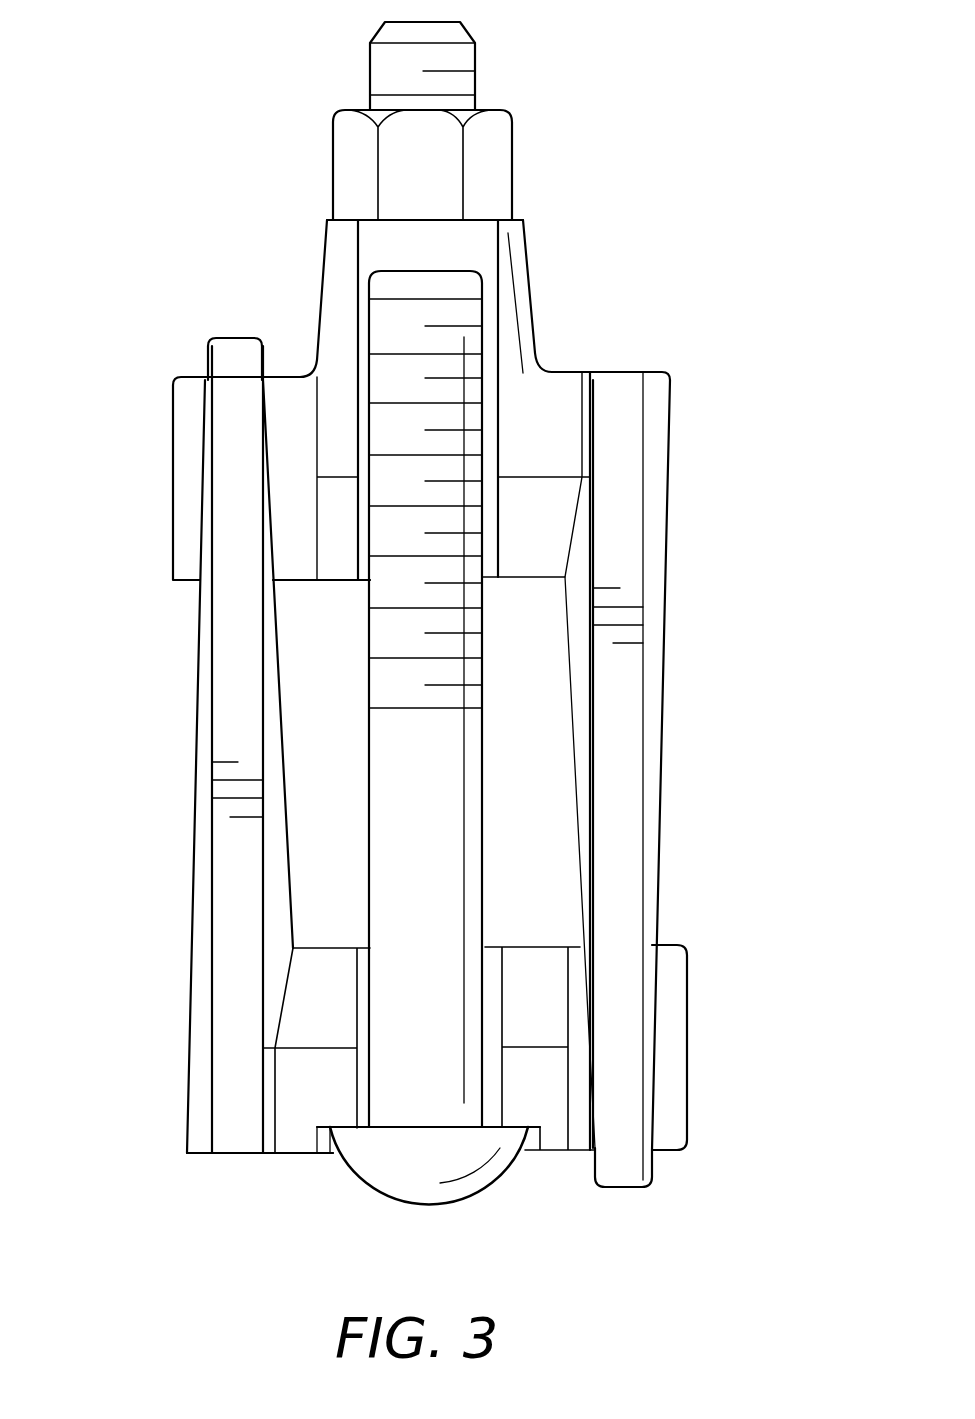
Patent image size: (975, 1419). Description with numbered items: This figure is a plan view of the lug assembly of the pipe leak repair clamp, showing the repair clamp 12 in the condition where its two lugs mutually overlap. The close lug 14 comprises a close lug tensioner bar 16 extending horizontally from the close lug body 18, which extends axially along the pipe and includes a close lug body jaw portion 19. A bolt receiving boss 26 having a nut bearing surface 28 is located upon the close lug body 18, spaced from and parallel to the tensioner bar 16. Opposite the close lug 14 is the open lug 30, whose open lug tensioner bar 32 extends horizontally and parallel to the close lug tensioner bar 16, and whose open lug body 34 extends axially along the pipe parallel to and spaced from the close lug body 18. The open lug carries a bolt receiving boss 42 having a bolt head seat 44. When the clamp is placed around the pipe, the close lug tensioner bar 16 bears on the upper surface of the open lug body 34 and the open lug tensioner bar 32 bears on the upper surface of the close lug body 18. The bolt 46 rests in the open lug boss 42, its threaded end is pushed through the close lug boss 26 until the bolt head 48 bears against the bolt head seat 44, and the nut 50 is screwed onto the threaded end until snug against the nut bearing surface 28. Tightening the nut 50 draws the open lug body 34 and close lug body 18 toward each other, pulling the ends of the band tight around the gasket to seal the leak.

The repair clamp 12 is at (315, 253).
The close lug 14 is at (700, 441).
The close lug tensioner bar 16 is at (625, 777).
The close lug body 18 is at (283, 448).
The close lug body jaw portion 19 is at (333, 580).
The bolt receiving boss 26 is at (527, 282).
The nut bearing surface 28 is at (515, 217).
The open lug 30 is at (173, 999).
The open lug tensioner bar 32 is at (230, 697).
The open lug body 34 is at (333, 1099).
The bolt receiving boss 42 is at (302, 1140).
The bolt head seat 44 is at (538, 1153).
The bolt 46 is at (440, 841).
The bolt head 48 is at (415, 1193).
The nut 50 is at (488, 150).